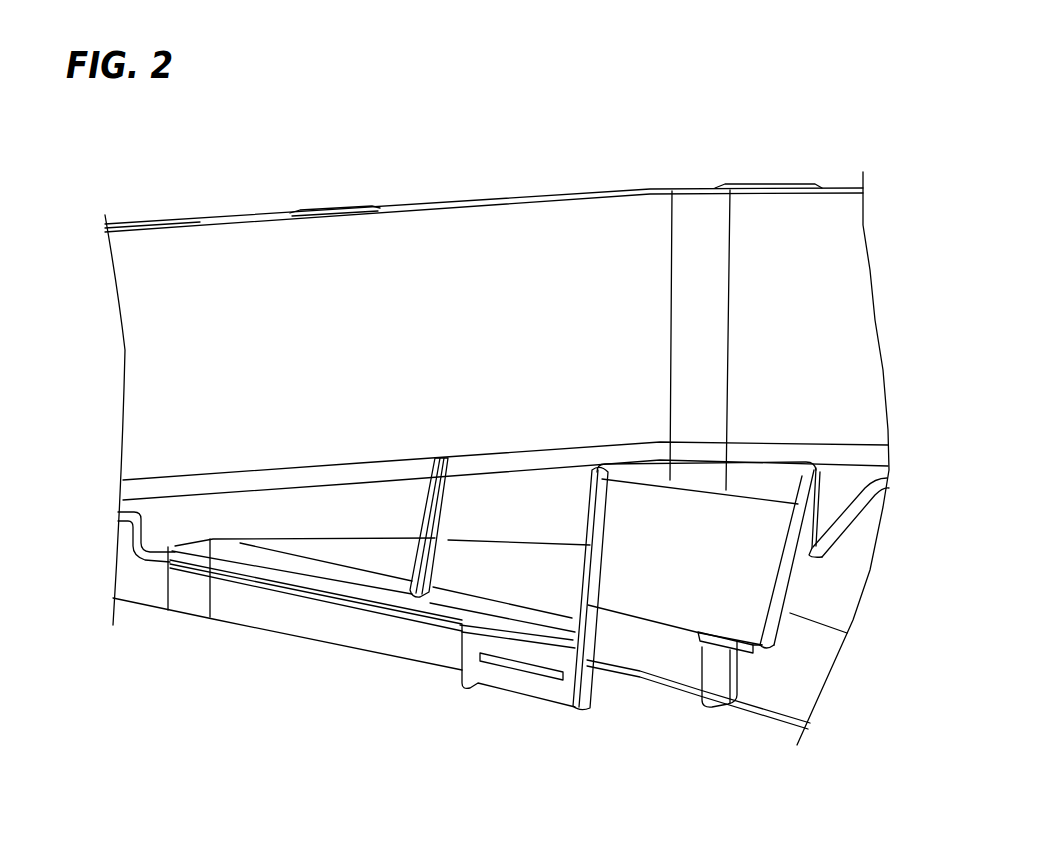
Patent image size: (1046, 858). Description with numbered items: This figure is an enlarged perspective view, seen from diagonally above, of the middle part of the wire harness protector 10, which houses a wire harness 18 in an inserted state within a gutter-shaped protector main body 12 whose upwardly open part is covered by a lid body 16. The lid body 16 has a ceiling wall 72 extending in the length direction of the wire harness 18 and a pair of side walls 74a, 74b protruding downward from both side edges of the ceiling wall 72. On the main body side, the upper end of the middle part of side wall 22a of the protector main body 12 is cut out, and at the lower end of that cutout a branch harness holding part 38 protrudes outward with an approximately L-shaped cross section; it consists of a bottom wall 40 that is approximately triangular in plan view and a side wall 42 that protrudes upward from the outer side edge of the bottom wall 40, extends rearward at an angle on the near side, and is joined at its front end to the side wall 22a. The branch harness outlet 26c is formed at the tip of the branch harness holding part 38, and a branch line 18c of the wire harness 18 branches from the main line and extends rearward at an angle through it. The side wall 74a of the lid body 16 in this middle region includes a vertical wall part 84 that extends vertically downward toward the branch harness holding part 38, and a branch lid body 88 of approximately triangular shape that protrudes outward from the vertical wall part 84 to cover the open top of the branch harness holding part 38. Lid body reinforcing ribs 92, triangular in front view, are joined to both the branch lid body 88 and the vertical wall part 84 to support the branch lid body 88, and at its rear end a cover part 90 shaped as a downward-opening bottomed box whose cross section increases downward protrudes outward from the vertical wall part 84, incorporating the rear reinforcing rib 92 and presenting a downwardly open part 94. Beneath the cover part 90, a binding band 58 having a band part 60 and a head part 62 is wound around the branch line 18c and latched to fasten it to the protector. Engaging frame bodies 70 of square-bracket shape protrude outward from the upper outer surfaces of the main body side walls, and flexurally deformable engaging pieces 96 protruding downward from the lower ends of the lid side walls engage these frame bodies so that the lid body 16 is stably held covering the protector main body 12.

The wire harness protector 10 is at (500, 148).
The protector main body 12 is at (461, 467).
The lid body 16 is at (613, 182).
The wire harness 18 is at (824, 607).
The branch line 18c is at (795, 668).
The side wall 22a is at (868, 524).
The branch harness outlet 26c is at (631, 692).
The branch harness holding part 38 is at (316, 627).
The bottom wall 40 is at (240, 620).
The side wall 42 is at (287, 608).
The binding band 58 is at (735, 610).
The band part 60 is at (720, 680).
The head part 62 is at (720, 638).
The engaging frame body 70 is at (335, 210).
The ceiling wall 72 is at (443, 245).
The side wall 74a is at (120, 508).
The side wall 74b is at (195, 220).
The vertical wall part 84 is at (303, 515).
The branch lid body 88 is at (483, 570).
The cover part 90 is at (697, 518).
The lid body reinforcing rib 92 is at (430, 510).
The downwardly open part 94 is at (648, 620).
The engaging piece 96 is at (517, 665).